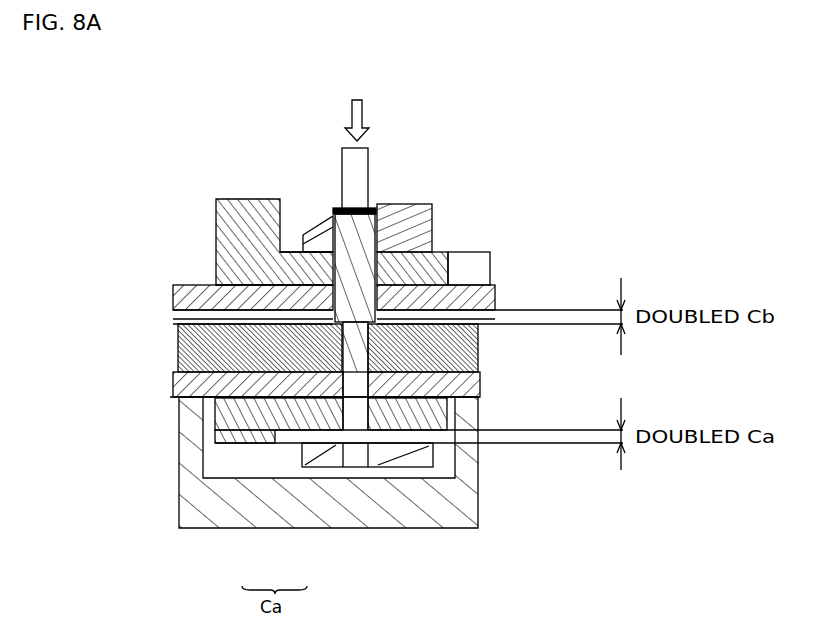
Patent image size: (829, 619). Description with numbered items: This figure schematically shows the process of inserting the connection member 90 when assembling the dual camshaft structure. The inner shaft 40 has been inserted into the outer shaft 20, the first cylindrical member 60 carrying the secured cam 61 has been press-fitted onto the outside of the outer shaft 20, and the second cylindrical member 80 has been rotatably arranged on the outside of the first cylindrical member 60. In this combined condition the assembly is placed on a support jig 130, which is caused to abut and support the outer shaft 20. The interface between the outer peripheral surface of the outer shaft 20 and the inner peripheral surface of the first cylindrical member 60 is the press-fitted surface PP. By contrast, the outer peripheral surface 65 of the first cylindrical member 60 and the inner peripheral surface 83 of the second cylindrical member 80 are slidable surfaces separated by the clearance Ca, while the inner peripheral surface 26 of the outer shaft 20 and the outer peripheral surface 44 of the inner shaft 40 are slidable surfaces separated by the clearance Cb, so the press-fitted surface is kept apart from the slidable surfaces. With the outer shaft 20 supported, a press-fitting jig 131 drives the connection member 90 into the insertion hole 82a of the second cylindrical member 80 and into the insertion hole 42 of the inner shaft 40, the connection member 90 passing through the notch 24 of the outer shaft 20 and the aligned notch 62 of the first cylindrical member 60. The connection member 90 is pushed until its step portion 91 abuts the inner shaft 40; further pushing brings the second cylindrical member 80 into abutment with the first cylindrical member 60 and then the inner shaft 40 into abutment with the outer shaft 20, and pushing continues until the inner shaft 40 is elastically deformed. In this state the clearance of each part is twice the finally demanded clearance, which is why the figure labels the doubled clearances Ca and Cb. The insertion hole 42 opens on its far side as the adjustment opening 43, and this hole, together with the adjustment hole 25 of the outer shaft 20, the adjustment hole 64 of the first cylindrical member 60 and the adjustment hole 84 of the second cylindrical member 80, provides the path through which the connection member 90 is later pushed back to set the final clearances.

The press-fitting jig 131 is at (370, 158).
The connection member 90 is at (333, 207).
The insertion hole of the second cylindrical member 82a is at (378, 228).
The second cylindrical member 80 is at (420, 212).
The first cylindrical member 60 is at (448, 253).
The secured cam 61 is at (216, 215).
The inner peripheral surface of the second cylindrical member 83 is at (320, 270).
The notch 62 is at (255, 268).
The press-fitted surface PP is at (452, 286).
The outer shaft 20 is at (493, 287).
The inner peripheral surface of the outer shaft 26 is at (463, 311).
The notch 24 is at (330, 311).
The outer peripheral surface of the inner shaft 44 is at (478, 327).
The inner shaft 40 is at (475, 355).
The step portion 91 is at (335, 322).
The insertion hole 42 is at (377, 387).
The adjustment hole of the outer shaft 25 is at (445, 393).
The support jig 130 is at (478, 518).
The adjustment hole of the first cylindrical member 64 is at (443, 440).
The outer peripheral surface of the first cylindrical member 65 is at (333, 209).
The adjustment hole of the second cylindrical member 84 is at (368, 468).
The adjustment opening 43 is at (262, 398).